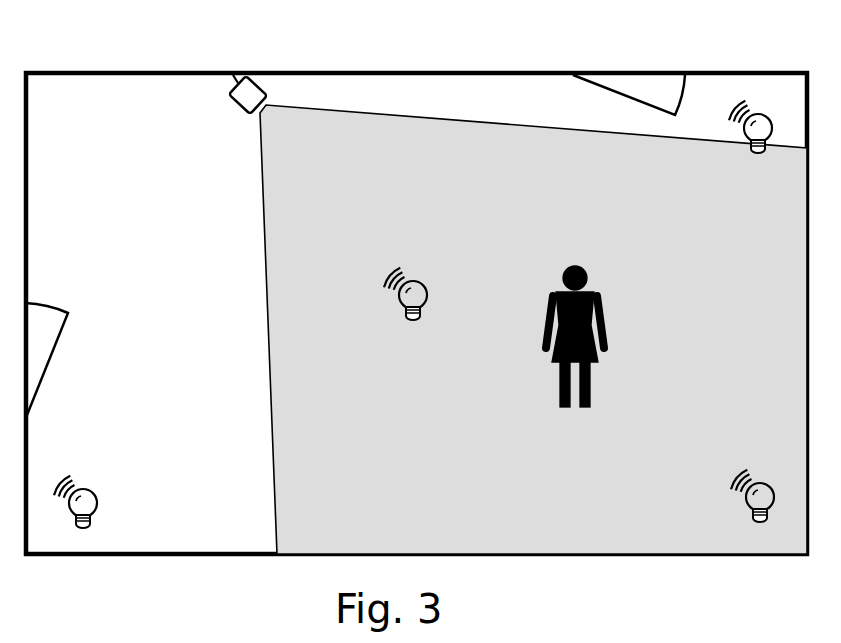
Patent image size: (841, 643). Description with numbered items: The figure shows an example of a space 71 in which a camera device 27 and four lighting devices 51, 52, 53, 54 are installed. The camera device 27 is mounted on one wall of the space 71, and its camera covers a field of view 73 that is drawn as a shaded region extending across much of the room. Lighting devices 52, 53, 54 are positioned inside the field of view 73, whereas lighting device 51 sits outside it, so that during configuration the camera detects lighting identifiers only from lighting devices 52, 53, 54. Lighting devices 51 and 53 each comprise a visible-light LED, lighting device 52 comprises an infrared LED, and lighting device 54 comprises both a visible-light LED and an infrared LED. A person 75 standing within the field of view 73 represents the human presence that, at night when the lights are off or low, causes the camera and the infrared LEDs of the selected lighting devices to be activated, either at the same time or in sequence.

The space 71 is at (416, 281).
The camera device 27 is at (247, 61).
The field of view 73 is at (405, 494).
The person 75 is at (606, 336).
The lighting device 51 is at (109, 502).
The lighting device 52 is at (394, 315).
The lighting device 53 is at (735, 146).
The lighting device 54 is at (737, 507).